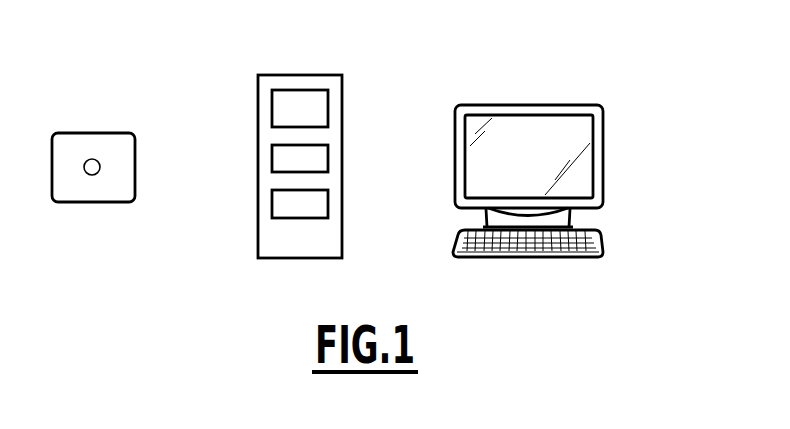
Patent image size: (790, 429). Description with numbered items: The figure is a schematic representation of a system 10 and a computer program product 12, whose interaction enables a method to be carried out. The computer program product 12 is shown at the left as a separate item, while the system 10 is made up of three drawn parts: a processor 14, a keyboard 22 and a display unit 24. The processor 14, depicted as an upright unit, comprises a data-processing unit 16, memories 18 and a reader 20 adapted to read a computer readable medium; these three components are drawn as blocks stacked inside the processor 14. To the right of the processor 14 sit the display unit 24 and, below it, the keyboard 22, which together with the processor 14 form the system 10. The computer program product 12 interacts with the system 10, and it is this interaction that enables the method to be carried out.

The system 10 is at (635, 113).
The computer program product 12 is at (135, 170).
The processor 14 is at (322, 245).
The data-processing unit 16 is at (322, 203).
The memories 18 is at (322, 158).
The reader 20 is at (322, 108).
The keyboard 22 is at (595, 236).
The display unit 24 is at (580, 178).